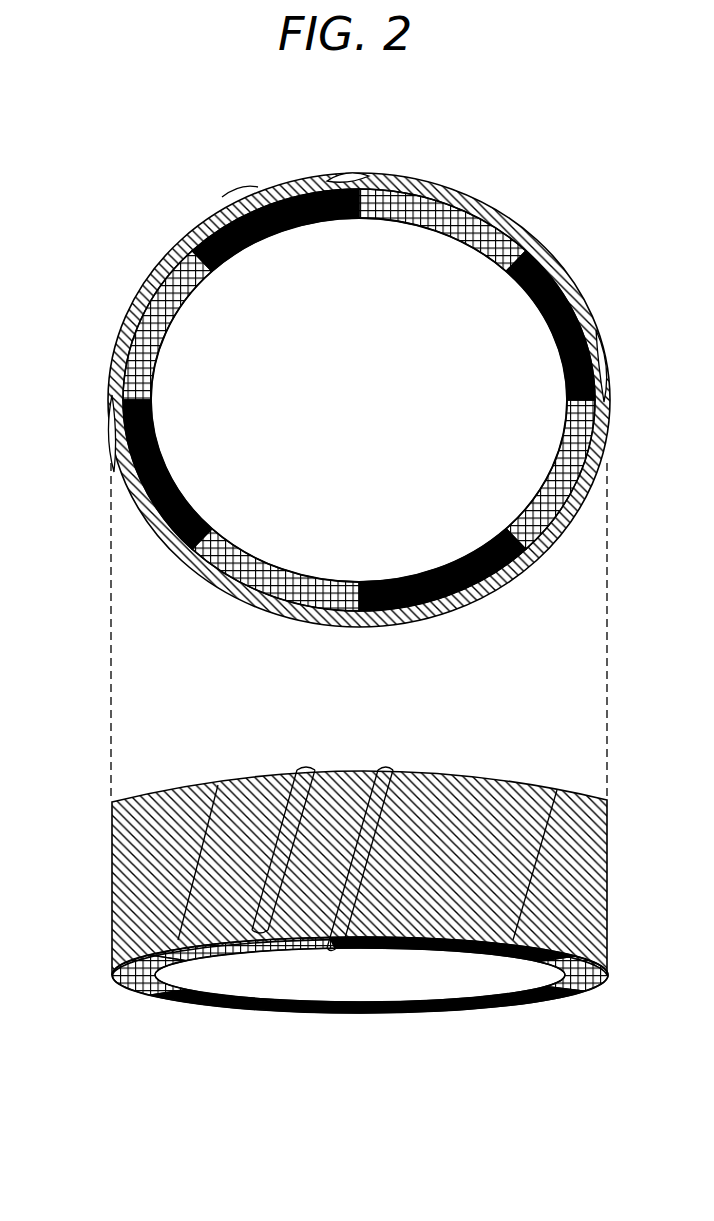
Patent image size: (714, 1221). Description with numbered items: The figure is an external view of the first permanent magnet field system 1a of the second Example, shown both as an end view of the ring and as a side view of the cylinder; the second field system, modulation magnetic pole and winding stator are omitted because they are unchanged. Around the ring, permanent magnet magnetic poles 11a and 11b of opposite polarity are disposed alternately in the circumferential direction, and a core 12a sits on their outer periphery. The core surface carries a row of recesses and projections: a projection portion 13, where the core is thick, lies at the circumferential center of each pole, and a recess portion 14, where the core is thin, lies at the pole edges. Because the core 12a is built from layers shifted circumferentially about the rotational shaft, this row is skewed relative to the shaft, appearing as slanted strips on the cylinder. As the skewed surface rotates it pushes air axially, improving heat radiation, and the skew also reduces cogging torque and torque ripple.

The first permanent magnet field system 1a is at (153, 261).
The permanent magnet magnetic pole 11a is at (213, 234).
The permanent magnet magnetic pole 11b is at (141, 341).
The core 12a is at (118, 356).
The projection portion 13 is at (240, 188).
The recess portion 14 is at (340, 172).